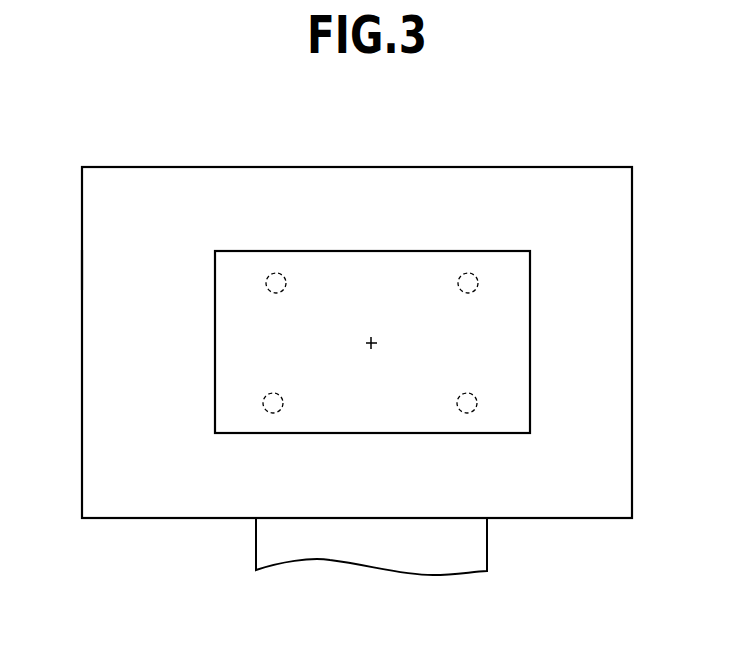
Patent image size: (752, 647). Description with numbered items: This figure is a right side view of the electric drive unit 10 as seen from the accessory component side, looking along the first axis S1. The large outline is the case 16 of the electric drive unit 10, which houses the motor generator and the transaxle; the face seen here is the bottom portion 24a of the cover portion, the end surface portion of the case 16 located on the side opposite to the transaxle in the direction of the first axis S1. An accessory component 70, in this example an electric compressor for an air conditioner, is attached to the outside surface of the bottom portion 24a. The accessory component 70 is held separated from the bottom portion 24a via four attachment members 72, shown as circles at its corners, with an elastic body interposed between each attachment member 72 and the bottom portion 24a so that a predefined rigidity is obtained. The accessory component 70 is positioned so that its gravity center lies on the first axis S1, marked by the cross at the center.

The electric drive unit 10 is at (583, 140).
The case 16 is at (148, 153).
The bottom portion of the cover portion 24a is at (115, 269).
The accessory component 70 is at (355, 278).
The attachment members 72 is at (277, 272).
The first axis S1 is at (400, 331).